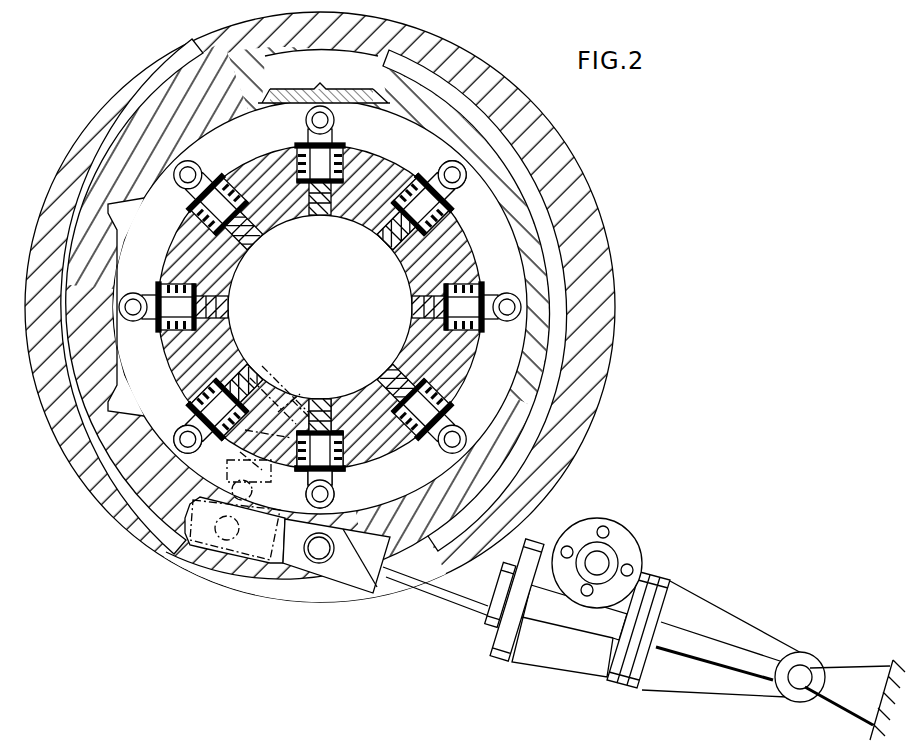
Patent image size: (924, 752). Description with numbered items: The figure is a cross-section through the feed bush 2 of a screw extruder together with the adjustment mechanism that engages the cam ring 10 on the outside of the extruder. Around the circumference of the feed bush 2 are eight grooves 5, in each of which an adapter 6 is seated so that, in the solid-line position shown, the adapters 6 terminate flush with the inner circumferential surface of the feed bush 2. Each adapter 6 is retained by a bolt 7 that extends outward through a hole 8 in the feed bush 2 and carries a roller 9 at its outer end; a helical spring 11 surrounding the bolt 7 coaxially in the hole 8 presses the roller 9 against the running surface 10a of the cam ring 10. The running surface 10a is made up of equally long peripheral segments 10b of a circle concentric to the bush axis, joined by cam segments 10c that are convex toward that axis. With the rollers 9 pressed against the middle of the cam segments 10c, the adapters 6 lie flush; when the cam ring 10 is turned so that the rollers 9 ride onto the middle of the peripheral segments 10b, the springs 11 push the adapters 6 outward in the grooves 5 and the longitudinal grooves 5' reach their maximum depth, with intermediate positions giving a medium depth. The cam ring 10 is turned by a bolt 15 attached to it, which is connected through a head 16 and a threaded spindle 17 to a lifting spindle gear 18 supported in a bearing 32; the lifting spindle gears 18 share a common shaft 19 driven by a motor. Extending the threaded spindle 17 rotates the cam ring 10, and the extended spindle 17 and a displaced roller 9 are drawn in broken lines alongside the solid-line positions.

The feed bush 2 is at (455, 266).
The grooves 5 is at (423, 409).
The longitudinal grooves 5' is at (269, 430).
The adapters 6 is at (332, 402).
The bolts 7 is at (446, 200).
The holes 8 is at (450, 224).
The rollers 9 is at (226, 478).
The cam ring 10 is at (540, 383).
The running surface 10a is at (560, 346).
The peripheral segments 10b is at (118, 398).
The cam segments 10c is at (108, 310).
The helical springs 11 is at (342, 466).
The bolts 15 is at (320, 558).
The head 16 is at (370, 582).
The threaded spindle 17 is at (432, 600).
The lifting spindle gear 18 is at (566, 642).
The common shaft 19 is at (600, 562).
The bearing 32 is at (802, 690).